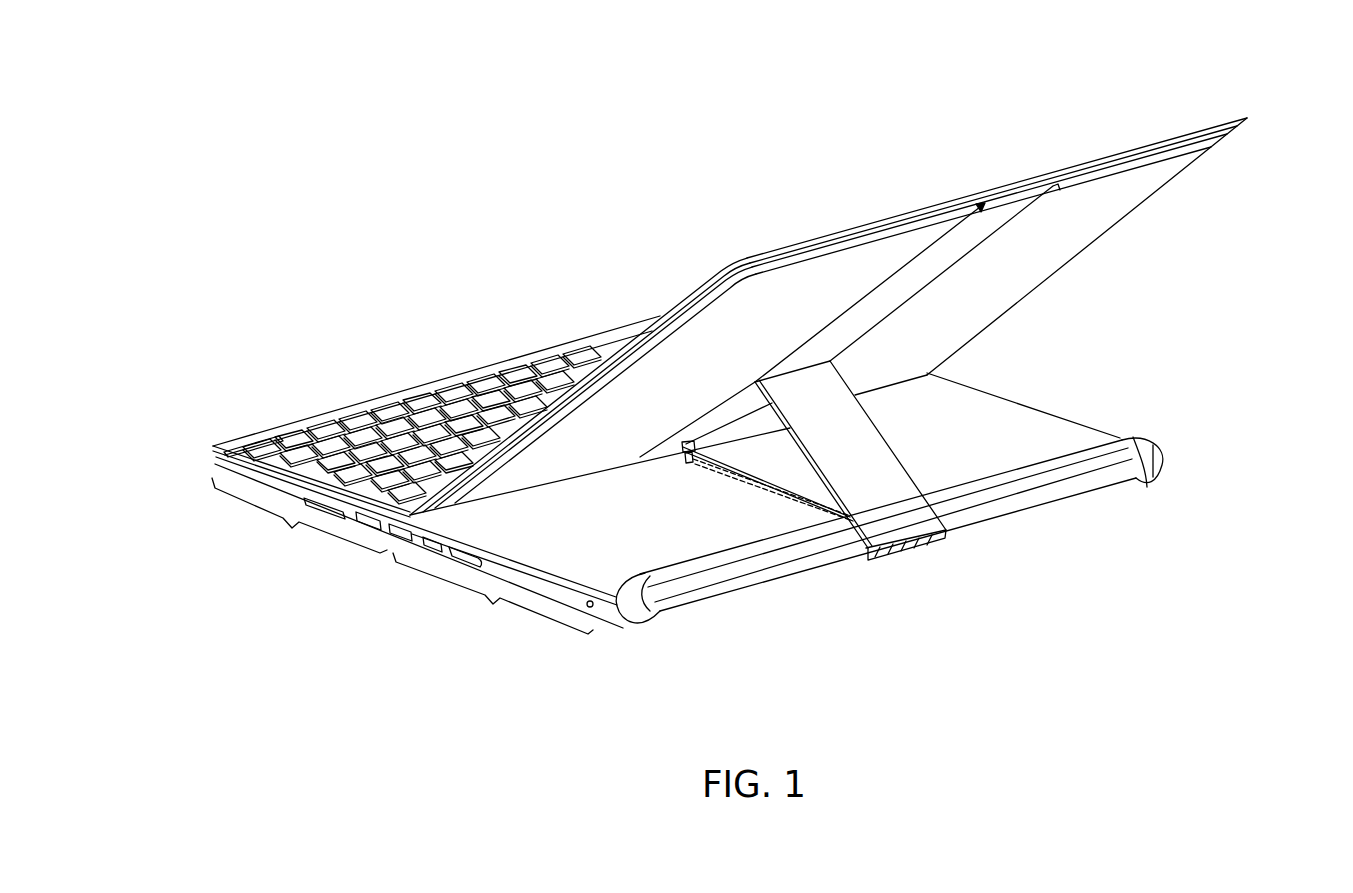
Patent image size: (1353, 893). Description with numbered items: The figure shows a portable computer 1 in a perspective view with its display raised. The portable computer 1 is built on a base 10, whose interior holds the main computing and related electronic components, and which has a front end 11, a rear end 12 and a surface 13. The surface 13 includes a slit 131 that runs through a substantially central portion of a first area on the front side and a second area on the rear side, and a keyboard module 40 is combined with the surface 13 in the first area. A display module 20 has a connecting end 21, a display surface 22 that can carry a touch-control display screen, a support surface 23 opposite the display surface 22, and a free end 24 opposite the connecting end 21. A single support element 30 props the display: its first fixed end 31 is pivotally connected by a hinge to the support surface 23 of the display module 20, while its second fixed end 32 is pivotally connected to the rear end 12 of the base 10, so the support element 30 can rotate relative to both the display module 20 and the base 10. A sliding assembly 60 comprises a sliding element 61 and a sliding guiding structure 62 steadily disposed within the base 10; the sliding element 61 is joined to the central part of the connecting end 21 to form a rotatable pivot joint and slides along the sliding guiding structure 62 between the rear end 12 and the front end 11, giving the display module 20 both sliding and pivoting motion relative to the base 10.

The portable computer 1 is at (374, 216).
The base 10 is at (210, 445).
The front end 11 is at (502, 365).
The keyboard module 40 is at (370, 412).
The display module 20 is at (1253, 114).
The connecting end 21 is at (530, 497).
The display surface 22 is at (683, 295).
The support surface 23 is at (1085, 236).
The free end 24 is at (1089, 158).
The support element 30 is at (897, 455).
The first fixed end 31 is at (818, 367).
The second fixed end 32 is at (914, 532).
The sliding assembly 60 is at (668, 525).
The sliding element 61 is at (675, 453).
The sliding guiding structure 62 is at (722, 475).
The rear end 12 is at (803, 566).
The surface 13 is at (1007, 416).
The slit 131 is at (787, 490).